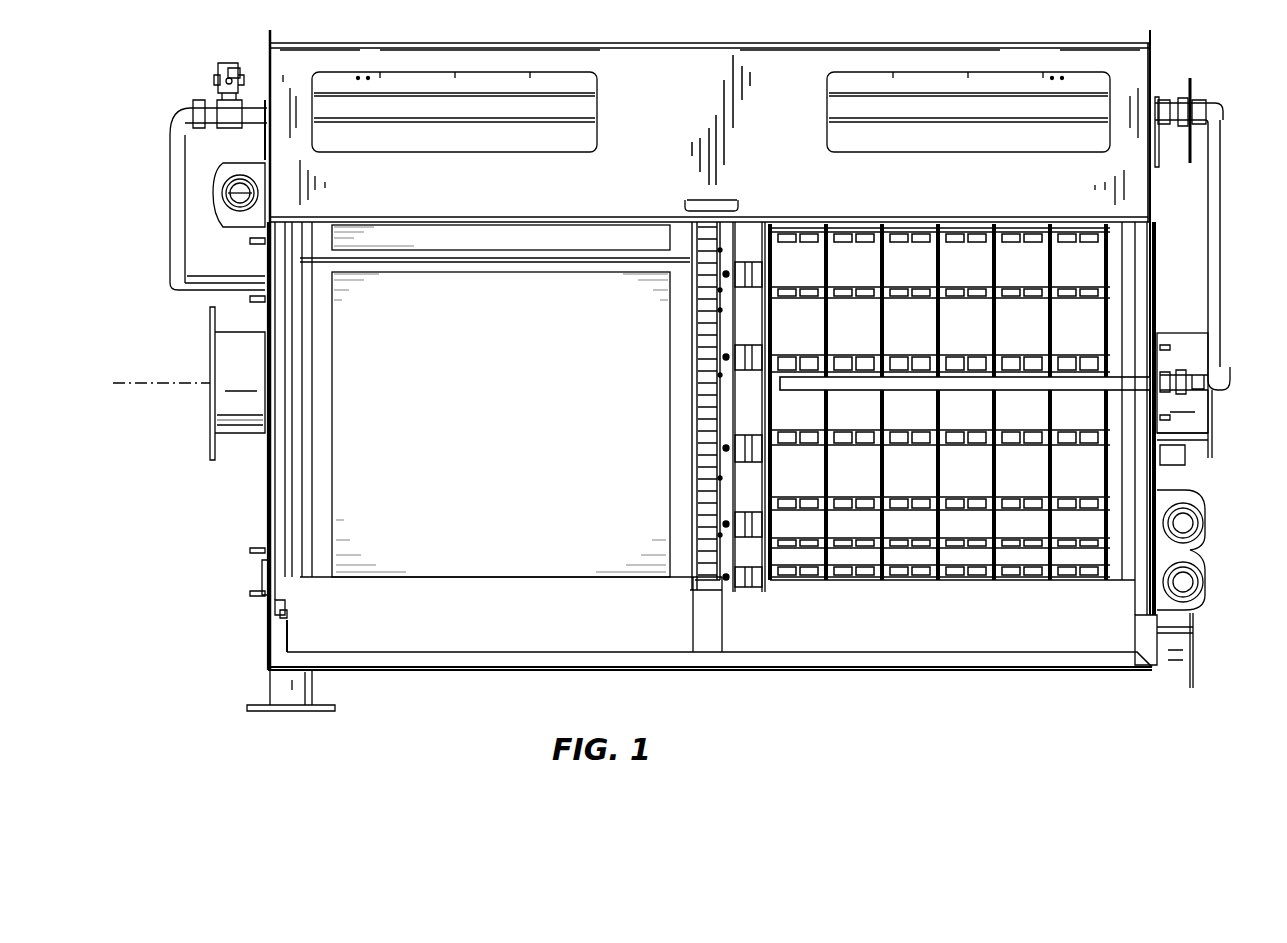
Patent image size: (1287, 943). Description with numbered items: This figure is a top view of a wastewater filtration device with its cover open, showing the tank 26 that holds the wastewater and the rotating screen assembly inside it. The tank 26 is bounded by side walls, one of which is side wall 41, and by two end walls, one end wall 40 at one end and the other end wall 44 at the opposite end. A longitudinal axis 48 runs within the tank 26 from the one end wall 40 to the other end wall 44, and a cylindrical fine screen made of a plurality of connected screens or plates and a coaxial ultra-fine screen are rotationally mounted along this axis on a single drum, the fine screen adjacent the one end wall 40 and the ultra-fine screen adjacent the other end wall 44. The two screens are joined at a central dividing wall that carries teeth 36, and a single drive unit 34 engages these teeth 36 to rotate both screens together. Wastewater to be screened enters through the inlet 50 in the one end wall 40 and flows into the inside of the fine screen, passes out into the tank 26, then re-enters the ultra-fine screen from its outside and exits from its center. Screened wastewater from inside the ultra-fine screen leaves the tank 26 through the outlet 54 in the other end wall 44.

The tank 26 is at (702, 686).
The drive unit 34 is at (710, 620).
The teeth 36 is at (700, 525).
The end wall 40 is at (1155, 248).
The side wall 41 is at (907, 660).
The end wall 44 is at (265, 480).
The longitudinal axis 48 is at (145, 380).
The inlet 50 is at (1213, 415).
The outlet 54 is at (210, 413).